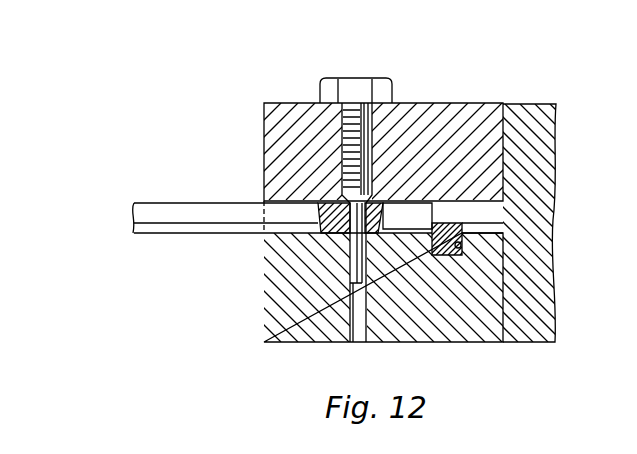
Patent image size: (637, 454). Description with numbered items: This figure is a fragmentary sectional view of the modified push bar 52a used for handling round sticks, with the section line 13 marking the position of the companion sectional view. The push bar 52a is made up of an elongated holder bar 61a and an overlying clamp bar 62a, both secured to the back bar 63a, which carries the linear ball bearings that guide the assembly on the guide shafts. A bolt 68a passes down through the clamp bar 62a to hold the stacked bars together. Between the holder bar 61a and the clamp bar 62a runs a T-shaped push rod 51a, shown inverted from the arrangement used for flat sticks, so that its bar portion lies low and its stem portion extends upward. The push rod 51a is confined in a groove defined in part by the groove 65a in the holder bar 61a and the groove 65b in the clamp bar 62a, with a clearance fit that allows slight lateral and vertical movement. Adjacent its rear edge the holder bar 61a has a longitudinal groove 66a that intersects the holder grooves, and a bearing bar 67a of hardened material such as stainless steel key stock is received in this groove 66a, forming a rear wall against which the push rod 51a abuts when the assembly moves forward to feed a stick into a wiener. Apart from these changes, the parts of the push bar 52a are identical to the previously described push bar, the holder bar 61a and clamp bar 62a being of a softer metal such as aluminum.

The clamp bar 62a is at (277, 120).
The holder bar 61a is at (288, 306).
The back bar 63a is at (542, 134).
The bolt 68a is at (348, 117).
The push rod 51a is at (245, 212).
The push bar 52a is at (495, 103).
The bearing bar 67a is at (452, 222).
The groove in the clamp bar 65b is at (490, 213).
The holder groove 65a is at (483, 230).
The longitudinal groove 66a is at (461, 246).
The section line 13- 13 is at (231, 155).